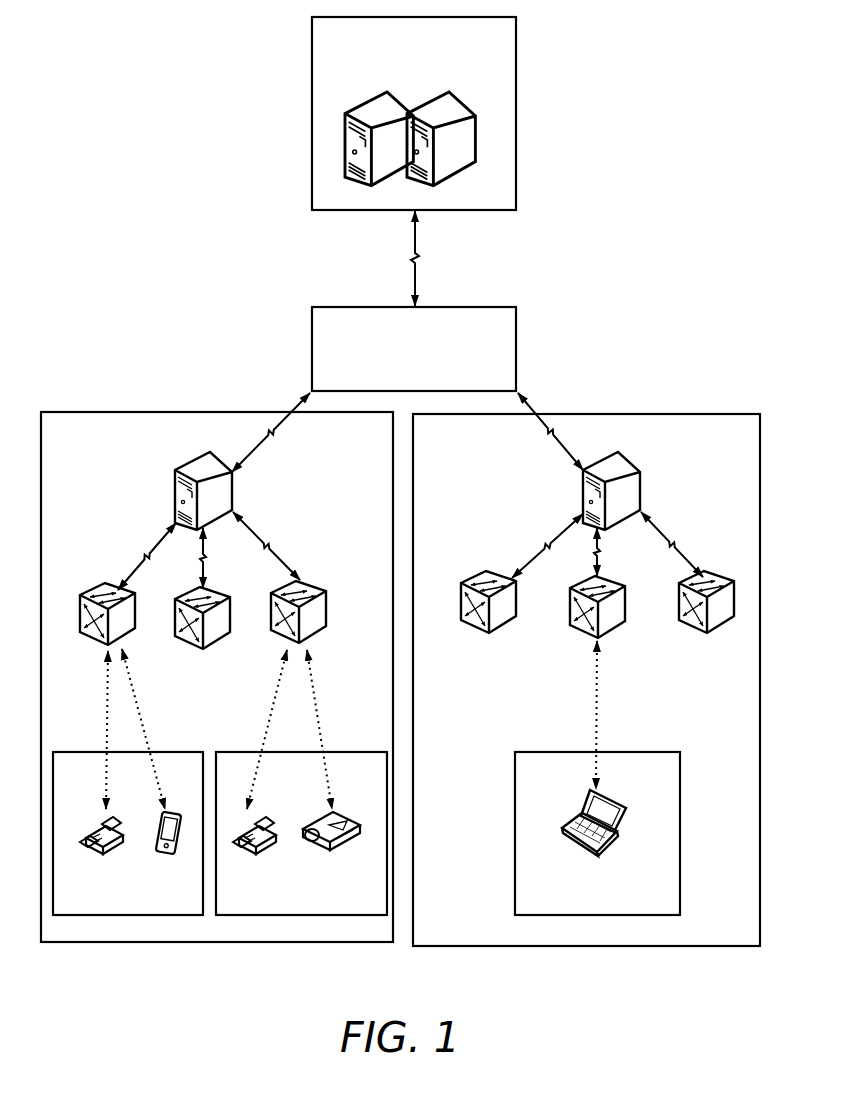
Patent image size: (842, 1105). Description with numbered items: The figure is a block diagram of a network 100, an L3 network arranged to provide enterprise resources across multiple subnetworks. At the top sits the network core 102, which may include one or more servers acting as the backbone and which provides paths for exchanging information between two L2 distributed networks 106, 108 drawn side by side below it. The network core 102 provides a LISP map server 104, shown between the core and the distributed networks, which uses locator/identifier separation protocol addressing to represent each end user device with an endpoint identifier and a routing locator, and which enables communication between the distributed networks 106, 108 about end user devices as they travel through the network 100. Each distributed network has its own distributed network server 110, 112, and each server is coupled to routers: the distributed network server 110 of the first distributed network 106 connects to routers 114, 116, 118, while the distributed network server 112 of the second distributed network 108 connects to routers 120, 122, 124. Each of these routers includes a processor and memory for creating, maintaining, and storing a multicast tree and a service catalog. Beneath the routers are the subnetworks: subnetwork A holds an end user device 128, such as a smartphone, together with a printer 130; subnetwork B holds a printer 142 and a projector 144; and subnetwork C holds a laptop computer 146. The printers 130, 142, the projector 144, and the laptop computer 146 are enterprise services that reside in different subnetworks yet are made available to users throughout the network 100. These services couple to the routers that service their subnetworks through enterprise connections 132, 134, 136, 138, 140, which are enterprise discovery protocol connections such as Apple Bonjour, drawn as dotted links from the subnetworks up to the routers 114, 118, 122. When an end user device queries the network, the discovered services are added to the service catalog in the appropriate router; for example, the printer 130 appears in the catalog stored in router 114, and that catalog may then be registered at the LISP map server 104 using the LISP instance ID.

The network 100 is at (638, 85).
The network core 102 is at (414, 113).
The LISP map server 104 is at (414, 349).
The distributed network 106 is at (188, 412).
The distributed network 108 is at (715, 414).
The distributed network server 110 is at (231, 507).
The distributed network server 112 is at (638, 467).
The router 114 is at (118, 588).
The router 116 is at (213, 590).
The router 118 is at (313, 598).
The router 120 is at (517, 595).
The router 122 is at (610, 597).
The router 124 is at (735, 605).
The end user device 128 is at (165, 855).
The printer 130 is at (105, 855).
The enterprise connection 132 is at (103, 730).
The enterprise connection 134 is at (143, 729).
The enterprise connection 136 is at (266, 729).
The enterprise connection 138 is at (308, 729).
The enterprise connection 140 is at (591, 715).
The printer 142 is at (272, 855).
The projector 144 is at (345, 855).
The laptop computer 146 is at (600, 813).